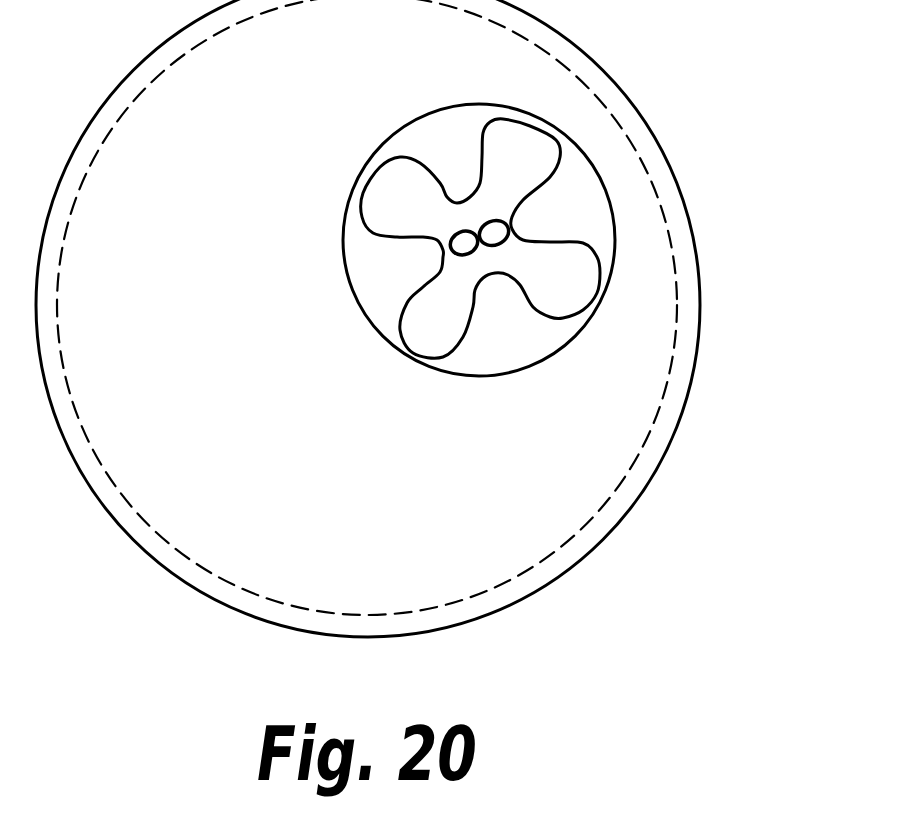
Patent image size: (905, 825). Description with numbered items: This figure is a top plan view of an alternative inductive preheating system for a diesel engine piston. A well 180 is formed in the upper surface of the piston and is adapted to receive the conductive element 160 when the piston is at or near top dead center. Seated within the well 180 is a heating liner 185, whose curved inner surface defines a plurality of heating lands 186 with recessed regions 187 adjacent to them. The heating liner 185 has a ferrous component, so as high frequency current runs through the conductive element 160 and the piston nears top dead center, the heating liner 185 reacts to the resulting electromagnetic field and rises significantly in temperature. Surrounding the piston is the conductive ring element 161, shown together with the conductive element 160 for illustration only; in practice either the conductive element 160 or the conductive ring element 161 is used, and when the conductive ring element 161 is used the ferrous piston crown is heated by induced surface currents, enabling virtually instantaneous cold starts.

The conductive element 160 is at (511, 230).
The conductive ring element 161 is at (648, 433).
The well 180 is at (445, 320).
The heating liner 185 is at (523, 353).
The heating lands 186 is at (413, 260).
The recessed regions 187 is at (420, 357).